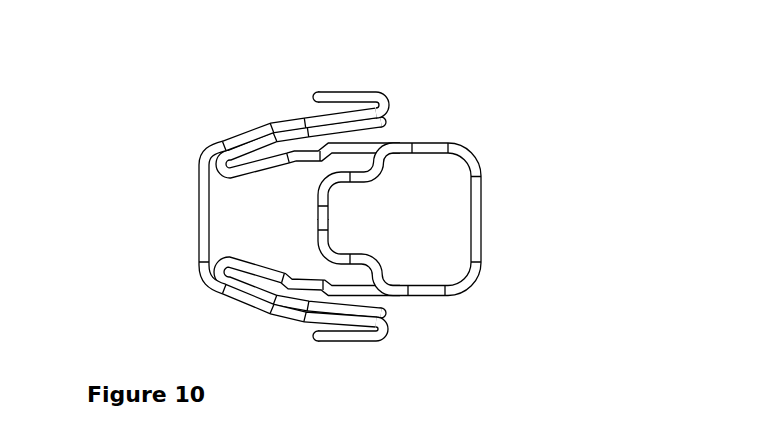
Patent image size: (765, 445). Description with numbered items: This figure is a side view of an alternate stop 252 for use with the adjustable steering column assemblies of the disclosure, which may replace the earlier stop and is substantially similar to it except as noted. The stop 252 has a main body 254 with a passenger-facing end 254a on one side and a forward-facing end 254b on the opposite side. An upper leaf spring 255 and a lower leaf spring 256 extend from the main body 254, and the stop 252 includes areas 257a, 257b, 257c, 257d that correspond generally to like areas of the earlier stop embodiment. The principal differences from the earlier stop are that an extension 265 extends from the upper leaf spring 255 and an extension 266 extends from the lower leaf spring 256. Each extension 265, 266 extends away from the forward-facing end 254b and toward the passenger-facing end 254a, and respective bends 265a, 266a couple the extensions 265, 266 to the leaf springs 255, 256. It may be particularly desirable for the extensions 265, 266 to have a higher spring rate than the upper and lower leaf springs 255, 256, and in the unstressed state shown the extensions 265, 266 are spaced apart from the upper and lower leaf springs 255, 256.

The stop 252 is at (330, 219).
The main body 254 is at (330, 219).
The passenger-facing end 254a is at (176, 208).
The forward-facing end 254b is at (494, 212).
The upper leaf spring 255 is at (306, 122).
The lower leaf spring 256 is at (322, 309).
The area 257a is at (207, 172).
The area 257b is at (399, 146).
The area 257c is at (207, 258).
The area 257d is at (413, 297).
The extension 265 is at (343, 94).
The bend 265a is at (392, 110).
The extension 266 is at (332, 337).
The bend 266a is at (383, 322).